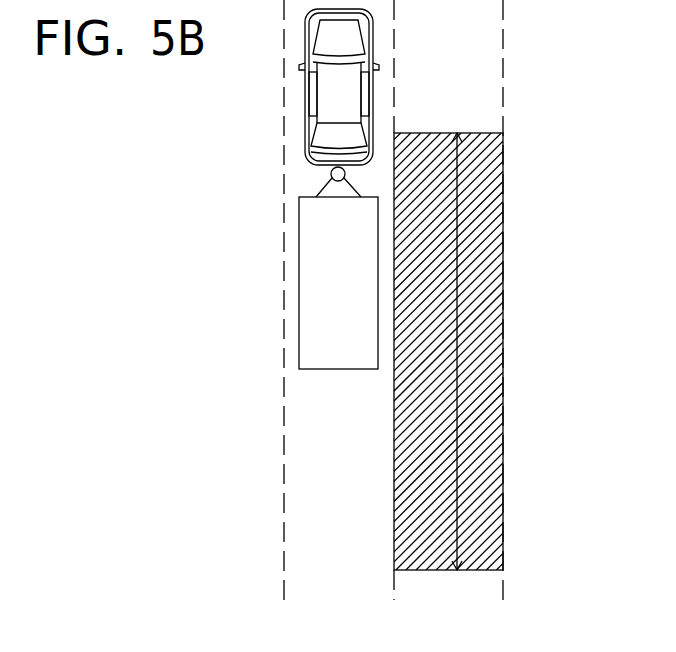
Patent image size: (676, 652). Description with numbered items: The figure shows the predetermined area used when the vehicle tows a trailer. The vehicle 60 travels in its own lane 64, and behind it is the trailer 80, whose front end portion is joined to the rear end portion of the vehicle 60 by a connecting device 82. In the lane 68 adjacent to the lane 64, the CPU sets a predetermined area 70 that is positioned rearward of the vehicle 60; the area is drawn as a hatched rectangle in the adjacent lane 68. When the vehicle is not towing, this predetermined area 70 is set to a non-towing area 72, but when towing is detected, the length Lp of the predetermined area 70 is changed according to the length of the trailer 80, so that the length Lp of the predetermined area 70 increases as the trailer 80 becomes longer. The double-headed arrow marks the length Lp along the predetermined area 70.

The vehicle 60 is at (304, 104).
The connecting device 82 is at (330, 172).
The trailer 80 is at (316, 300).
The lane 64 is at (315, 468).
The lane 68 is at (473, 38).
The predetermined area 70 is at (338, 343).
The non-towing area 72 is at (481, 267).
The length of the predetermined area Lp is at (459, 399).